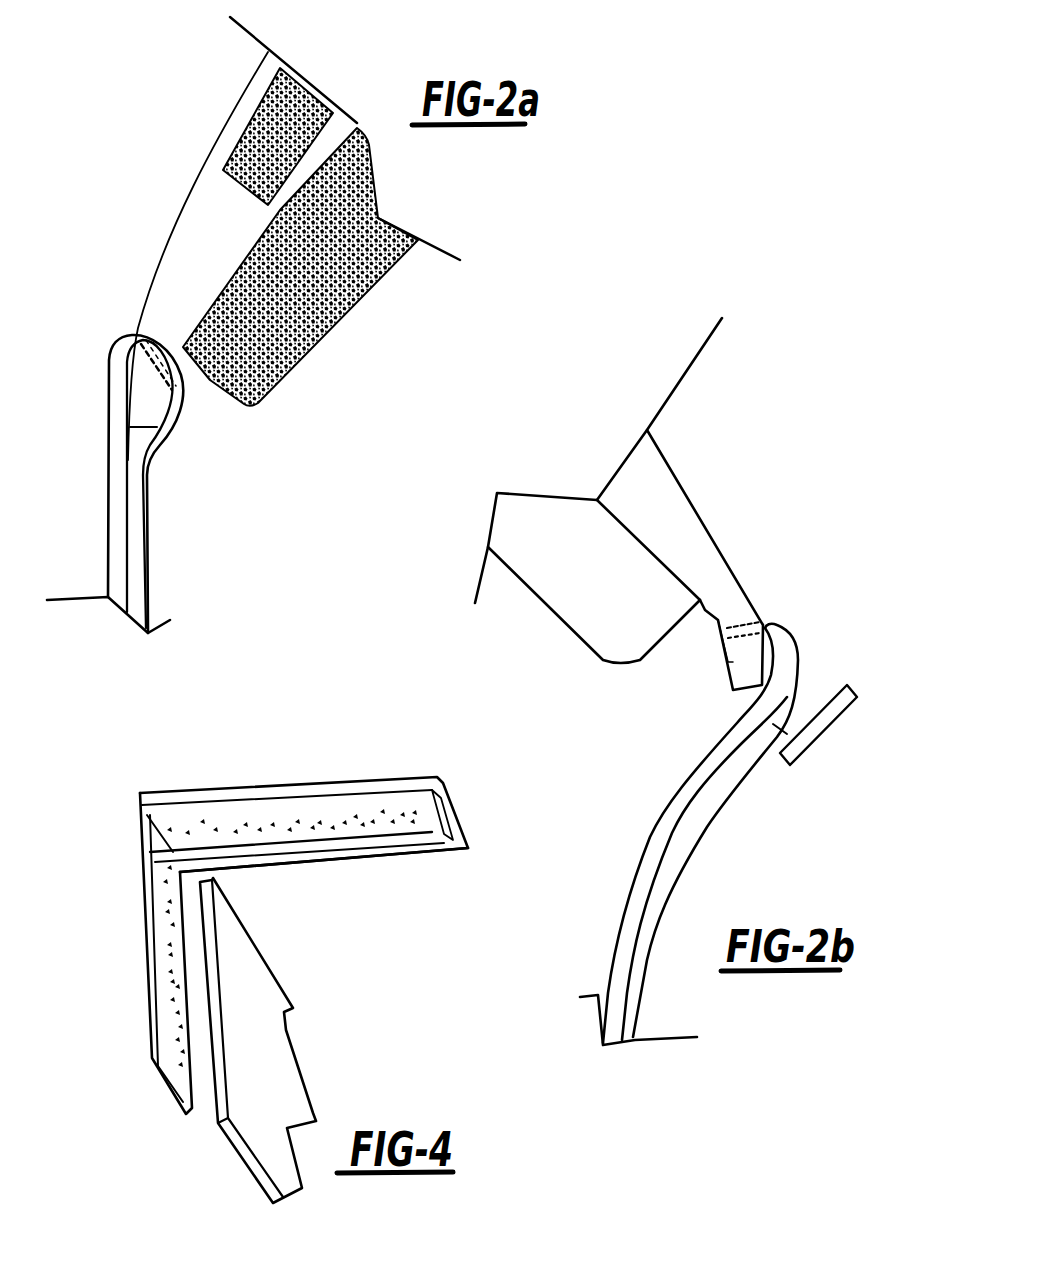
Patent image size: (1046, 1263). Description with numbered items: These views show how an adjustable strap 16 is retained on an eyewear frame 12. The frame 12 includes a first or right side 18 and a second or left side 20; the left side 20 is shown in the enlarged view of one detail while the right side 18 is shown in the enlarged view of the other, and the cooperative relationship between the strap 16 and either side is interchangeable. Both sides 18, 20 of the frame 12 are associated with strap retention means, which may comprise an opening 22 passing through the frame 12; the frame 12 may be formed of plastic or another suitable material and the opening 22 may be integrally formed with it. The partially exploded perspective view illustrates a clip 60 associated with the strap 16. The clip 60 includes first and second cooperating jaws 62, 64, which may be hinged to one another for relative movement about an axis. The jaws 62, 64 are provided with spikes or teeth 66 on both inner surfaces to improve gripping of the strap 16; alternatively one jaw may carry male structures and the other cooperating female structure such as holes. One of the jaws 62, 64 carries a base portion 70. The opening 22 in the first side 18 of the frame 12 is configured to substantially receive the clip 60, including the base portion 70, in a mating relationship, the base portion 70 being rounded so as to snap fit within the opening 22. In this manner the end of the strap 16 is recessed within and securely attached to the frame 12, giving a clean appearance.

In FIG. 2A, the eyewear frame 12 is at (157, 250).
In FIG. 2B, the eyewear frame 12 is at (716, 505).
In FIG. 2A, the strap 16 is at (152, 540).
In FIG. 2B, the strap 16 is at (657, 808).
In FIG. 4, the strap 16 is at (298, 1003).
In FIG. 2B, the first or right side 18 is at (843, 345).
In FIG. 2A, the second or left side 20 is at (150, 72).
In FIG. 2A, the opening 22 is at (112, 332).
In FIG. 2B, the opening 22 is at (764, 614).
In FIG. 4, the clip 60 is at (138, 788).
In FIG. 4, the first cooperating jaw 62 is at (313, 812).
In FIG. 4, the second cooperating jaw 64 is at (150, 953).
In FIG. 4, the spikes or teeth 66 is at (229, 822).
In FIG. 4, the base portion 70 is at (430, 860).